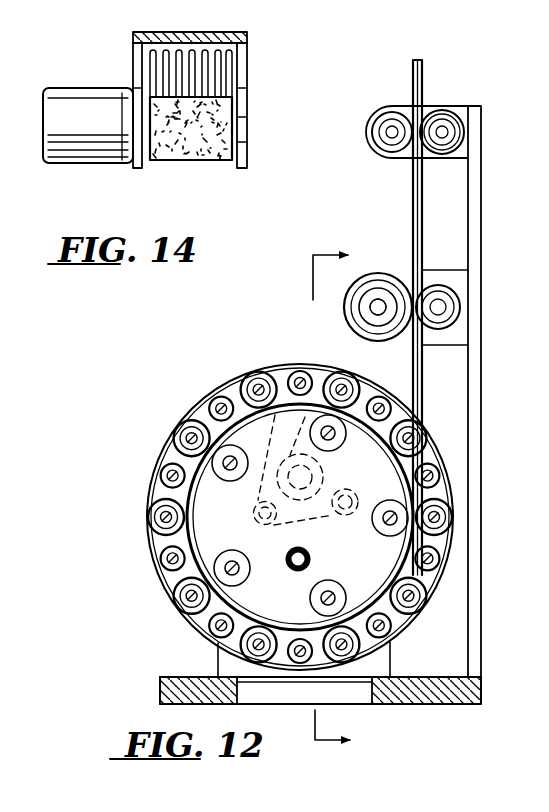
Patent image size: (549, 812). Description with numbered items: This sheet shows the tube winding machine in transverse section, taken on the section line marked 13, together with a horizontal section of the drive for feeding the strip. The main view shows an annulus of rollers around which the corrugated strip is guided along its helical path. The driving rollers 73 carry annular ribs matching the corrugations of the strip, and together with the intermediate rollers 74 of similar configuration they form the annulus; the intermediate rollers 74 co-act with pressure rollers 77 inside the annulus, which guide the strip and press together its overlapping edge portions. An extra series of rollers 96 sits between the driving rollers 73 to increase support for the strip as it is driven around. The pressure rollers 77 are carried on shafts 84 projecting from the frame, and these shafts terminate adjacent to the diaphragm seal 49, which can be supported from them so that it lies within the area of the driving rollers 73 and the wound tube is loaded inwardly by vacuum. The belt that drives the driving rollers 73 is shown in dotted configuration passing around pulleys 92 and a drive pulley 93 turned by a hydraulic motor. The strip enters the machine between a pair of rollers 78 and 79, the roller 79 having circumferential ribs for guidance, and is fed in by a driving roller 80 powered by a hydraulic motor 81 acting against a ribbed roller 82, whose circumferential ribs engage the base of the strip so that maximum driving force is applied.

In FIG. 12, the section line 13- 13 is at (315, 510).
In FIG. 12, the diaphragm seal 49 is at (213, 533).
In FIG. 12, the driving rollers 73 is at (260, 372).
In FIG. 12, the intermediate rollers 74 is at (343, 366).
In FIG. 12, the pressure rollers 77 is at (223, 557).
In FIG. 12, the roller 78 is at (372, 138).
In FIG. 12, the roller 79 is at (455, 130).
In FIG. 14, the driving roller 80 is at (177, 161).
In FIG. 12, the driving roller 80 is at (382, 287).
In FIG. 14, the hydraulic motor 81 is at (84, 164).
In FIG. 12, the hydraulic motor 81 is at (382, 330).
In FIG. 14, the ribbed roller 82 is at (208, 69).
In FIG. 12, the ribbed roller 82 is at (447, 297).
In FIG. 12, the shafts 84 is at (212, 462).
In FIG. 12, the pulleys 92 is at (330, 508).
In FIG. 12, the drive pulley 93 is at (318, 478).
In FIG. 12, the extra series of rollers 96 is at (300, 368).